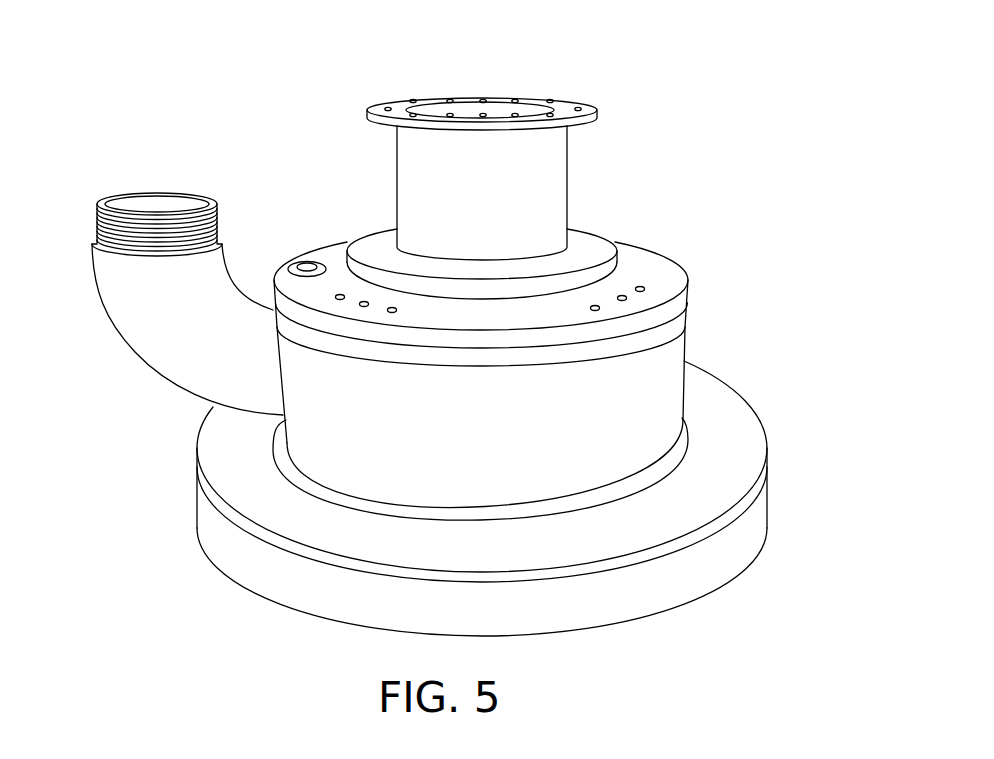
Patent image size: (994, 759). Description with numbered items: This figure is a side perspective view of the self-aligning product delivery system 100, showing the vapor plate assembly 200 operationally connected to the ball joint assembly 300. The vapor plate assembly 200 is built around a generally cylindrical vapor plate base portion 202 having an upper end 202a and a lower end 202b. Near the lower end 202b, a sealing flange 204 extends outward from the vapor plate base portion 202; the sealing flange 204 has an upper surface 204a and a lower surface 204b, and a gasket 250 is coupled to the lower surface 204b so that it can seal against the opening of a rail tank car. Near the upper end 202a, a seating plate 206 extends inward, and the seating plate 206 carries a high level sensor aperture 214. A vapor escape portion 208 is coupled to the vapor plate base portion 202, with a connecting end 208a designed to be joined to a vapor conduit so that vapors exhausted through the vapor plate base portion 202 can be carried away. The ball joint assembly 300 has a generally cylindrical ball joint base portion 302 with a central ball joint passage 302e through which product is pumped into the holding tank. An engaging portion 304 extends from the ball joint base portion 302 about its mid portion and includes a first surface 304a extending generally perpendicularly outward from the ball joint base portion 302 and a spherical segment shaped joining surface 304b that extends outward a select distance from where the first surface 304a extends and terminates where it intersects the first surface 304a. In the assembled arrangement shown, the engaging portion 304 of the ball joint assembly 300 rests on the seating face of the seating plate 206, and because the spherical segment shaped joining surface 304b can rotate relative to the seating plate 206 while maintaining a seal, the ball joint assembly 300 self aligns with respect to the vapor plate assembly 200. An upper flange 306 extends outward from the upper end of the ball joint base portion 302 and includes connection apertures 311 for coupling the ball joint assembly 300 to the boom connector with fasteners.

The self-aligning product delivery system 100 is at (735, 278).
The vapor plate assembly 200 is at (730, 345).
The vapor plate base portion 202 is at (640, 417).
The upper end 202a is at (630, 350).
The lower end 202b is at (628, 492).
The sealing flange 204 is at (750, 442).
The upper surface 204a is at (742, 462).
The lower surface 204b is at (727, 527).
The seating plate 206 is at (658, 277).
The vapor escape portion 208 is at (133, 313).
The connecting end 208a is at (217, 228).
The high level sensor aperture 214 is at (310, 266).
The gasket 250 is at (633, 610).
The ball joint assembly 300 is at (604, 173).
The ball joint base portion 302 is at (397, 192).
The central ball joint passage 302e is at (458, 104).
The engaging portion 304 is at (592, 253).
The first surface 304a is at (573, 232).
The spherical segment shaped joining surface 304b is at (530, 290).
The upper flange 306 is at (598, 116).
The connection apertures 311 is at (578, 107).